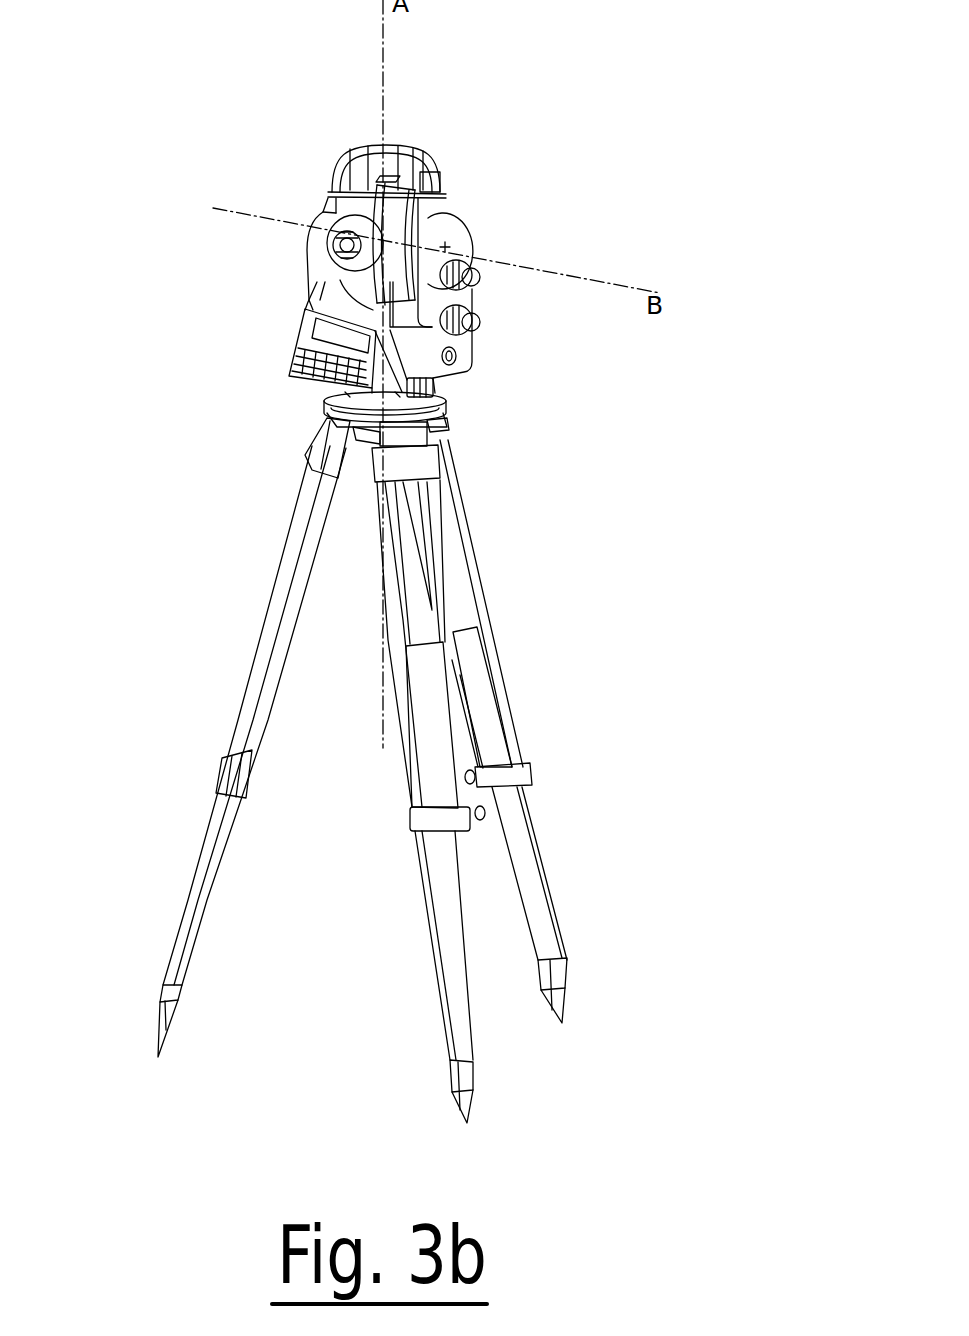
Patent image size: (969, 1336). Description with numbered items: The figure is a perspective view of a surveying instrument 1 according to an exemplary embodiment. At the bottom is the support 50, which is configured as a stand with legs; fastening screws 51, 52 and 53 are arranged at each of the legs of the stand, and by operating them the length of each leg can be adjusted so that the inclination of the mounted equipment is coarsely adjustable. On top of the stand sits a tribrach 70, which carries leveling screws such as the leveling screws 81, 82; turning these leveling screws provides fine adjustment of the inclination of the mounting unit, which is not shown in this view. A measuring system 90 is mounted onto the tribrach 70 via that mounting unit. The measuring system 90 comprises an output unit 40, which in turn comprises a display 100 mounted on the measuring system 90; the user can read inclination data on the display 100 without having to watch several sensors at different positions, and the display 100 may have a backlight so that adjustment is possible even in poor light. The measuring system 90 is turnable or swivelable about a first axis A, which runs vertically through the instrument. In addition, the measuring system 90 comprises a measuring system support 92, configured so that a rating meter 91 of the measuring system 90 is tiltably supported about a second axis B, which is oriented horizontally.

The surveying instrument 1 is at (268, 168).
The rating meter 91 is at (386, 172).
The measuring system 90 is at (481, 206).
The measuring system support 92 is at (462, 237).
The output unit 40 is at (284, 297).
The display 100 is at (320, 330).
The tribrach 70 is at (446, 379).
The leveling screw 82 is at (442, 396).
The leveling screw 81 is at (323, 399).
The support 50 is at (505, 549).
The fastening screw 51 is at (222, 772).
The fastening screw 53 is at (486, 766).
The fastening screw 52 is at (484, 811).